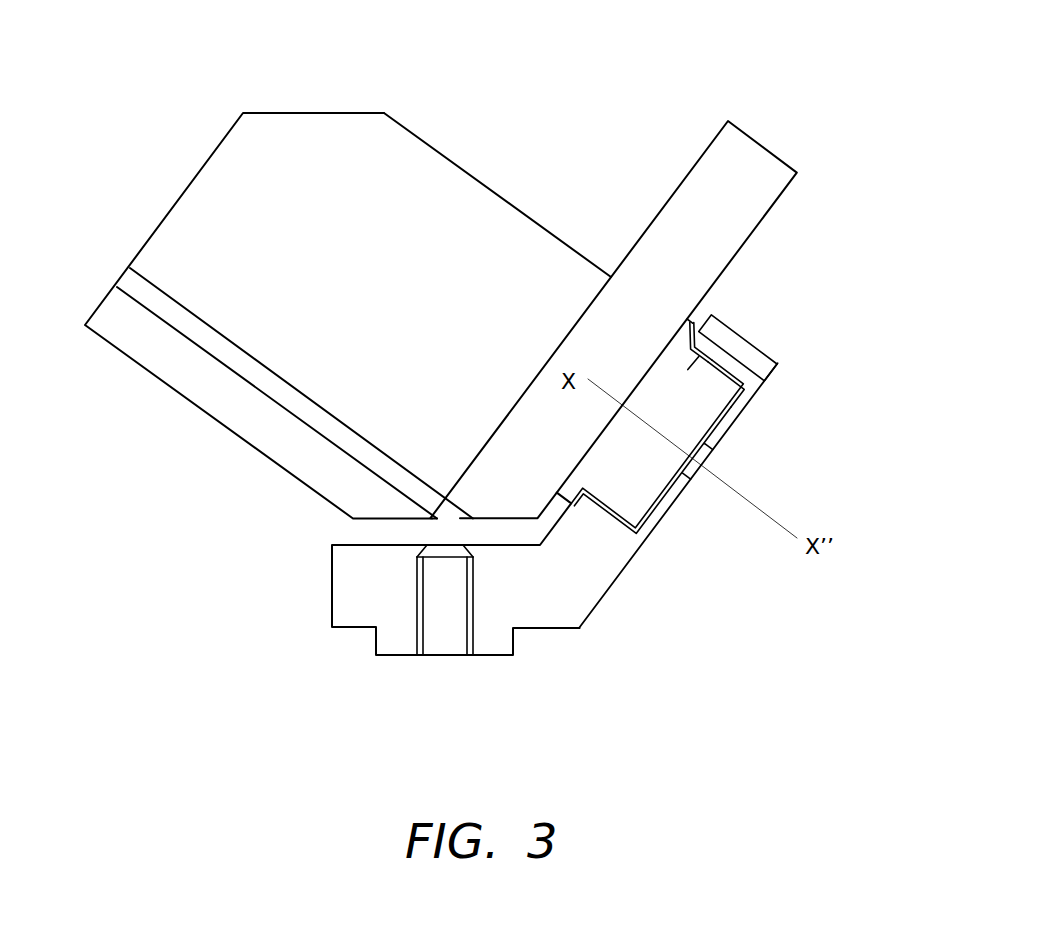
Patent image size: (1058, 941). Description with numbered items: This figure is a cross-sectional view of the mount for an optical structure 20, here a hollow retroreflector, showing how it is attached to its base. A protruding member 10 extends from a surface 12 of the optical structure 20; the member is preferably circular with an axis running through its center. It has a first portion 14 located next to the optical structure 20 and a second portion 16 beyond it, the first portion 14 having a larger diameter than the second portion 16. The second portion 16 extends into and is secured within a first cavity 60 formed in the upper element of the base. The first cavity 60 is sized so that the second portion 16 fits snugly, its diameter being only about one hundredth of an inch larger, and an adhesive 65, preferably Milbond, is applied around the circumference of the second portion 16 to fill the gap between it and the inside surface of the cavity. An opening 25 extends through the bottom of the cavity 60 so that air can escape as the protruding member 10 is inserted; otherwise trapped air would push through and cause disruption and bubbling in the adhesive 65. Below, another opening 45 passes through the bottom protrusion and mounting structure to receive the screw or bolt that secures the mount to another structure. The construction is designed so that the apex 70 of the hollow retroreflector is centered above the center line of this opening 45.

The optical structure 20 is at (617, 108).
The surface 12 is at (778, 205).
The first portion 14 is at (688, 320).
The protruding member 10 is at (705, 433).
The adhesive 65 is at (725, 370).
The first cavity 60 is at (757, 390).
The second portion 16 is at (702, 398).
The opening 25 is at (715, 462).
The apex 70 is at (446, 516).
The another opening 45 is at (446, 672).